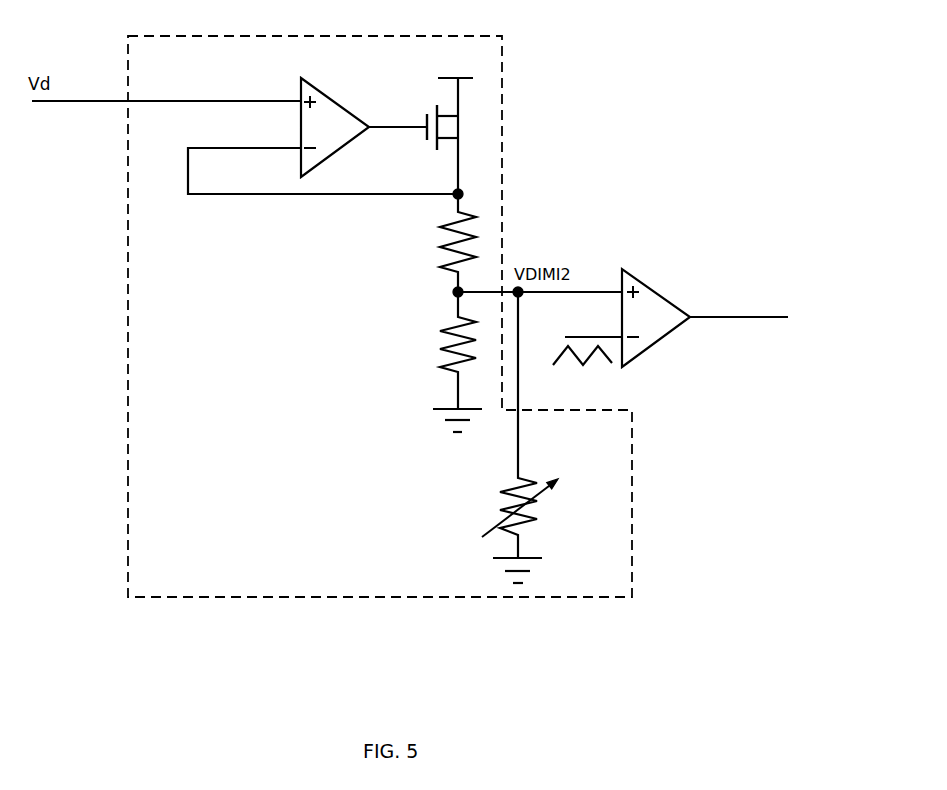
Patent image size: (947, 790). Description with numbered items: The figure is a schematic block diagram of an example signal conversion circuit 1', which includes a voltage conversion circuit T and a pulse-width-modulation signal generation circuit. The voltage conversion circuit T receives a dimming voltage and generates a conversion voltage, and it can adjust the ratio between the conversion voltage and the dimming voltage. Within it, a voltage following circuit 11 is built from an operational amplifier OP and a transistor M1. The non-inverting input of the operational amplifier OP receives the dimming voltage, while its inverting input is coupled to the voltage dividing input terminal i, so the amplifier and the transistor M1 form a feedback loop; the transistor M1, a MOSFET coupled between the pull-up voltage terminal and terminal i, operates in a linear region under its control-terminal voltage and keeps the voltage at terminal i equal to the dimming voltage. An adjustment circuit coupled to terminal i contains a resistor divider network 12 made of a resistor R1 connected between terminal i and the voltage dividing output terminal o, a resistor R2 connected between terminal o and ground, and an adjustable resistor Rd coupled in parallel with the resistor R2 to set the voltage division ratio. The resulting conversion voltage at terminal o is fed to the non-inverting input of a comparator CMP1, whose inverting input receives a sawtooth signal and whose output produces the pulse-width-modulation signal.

The signal conversion circuit 1' is at (358, 316).
The voltage following circuit 11 is at (340, 179).
The resistor divider network 12 is at (420, 324).
The voltage conversion circuit T is at (502, 172).
The operational amplifier OP is at (335, 127).
The transistor M1 is at (459, 124).
The resistor R1 is at (438, 243).
The resistor R2 is at (405, 408).
The adjustable resistor Rd is at (536, 437).
The comparator CMP1 is at (694, 318).